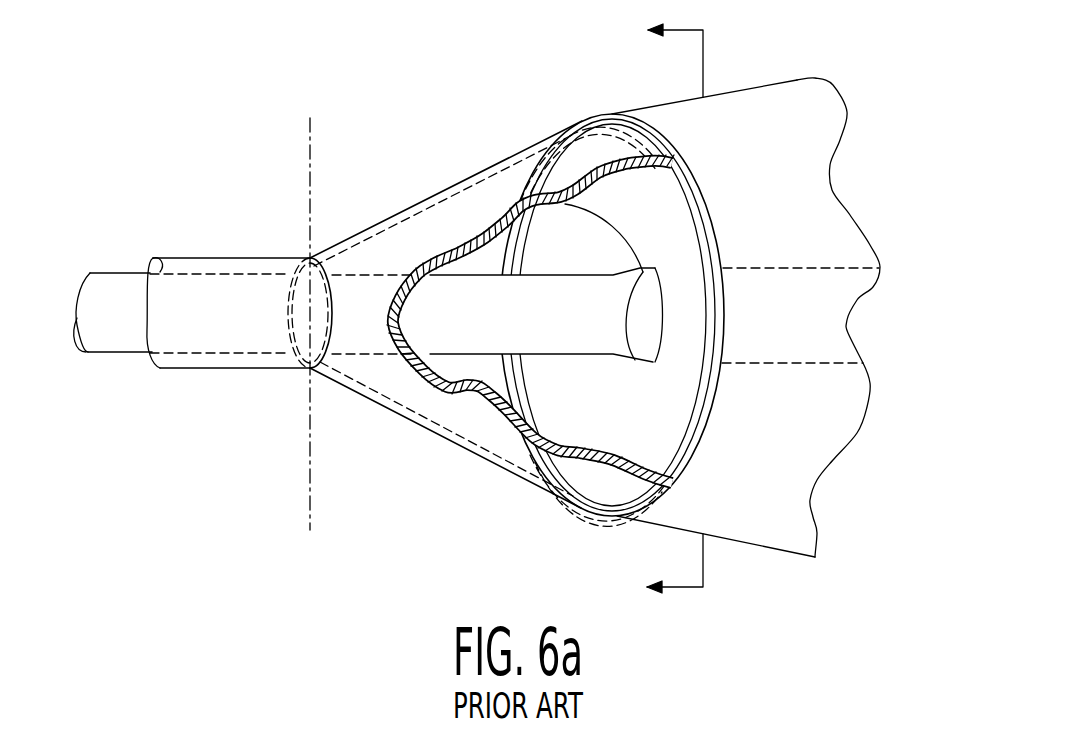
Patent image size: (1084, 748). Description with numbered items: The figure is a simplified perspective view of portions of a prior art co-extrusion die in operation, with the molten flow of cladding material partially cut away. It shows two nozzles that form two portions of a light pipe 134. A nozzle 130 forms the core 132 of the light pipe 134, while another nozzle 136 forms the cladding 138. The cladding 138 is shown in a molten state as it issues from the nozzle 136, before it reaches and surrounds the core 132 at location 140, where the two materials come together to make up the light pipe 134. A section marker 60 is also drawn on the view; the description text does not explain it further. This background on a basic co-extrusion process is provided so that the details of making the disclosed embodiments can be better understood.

The section line 6b-6b 60 is at (655, 308).
The nozzle 130 is at (553, 200).
The core 132 is at (553, 338).
The light pipe 134 is at (195, 245).
The nozzle 136 is at (683, 180).
The cladding 138 is at (460, 190).
The location 140 is at (313, 202).